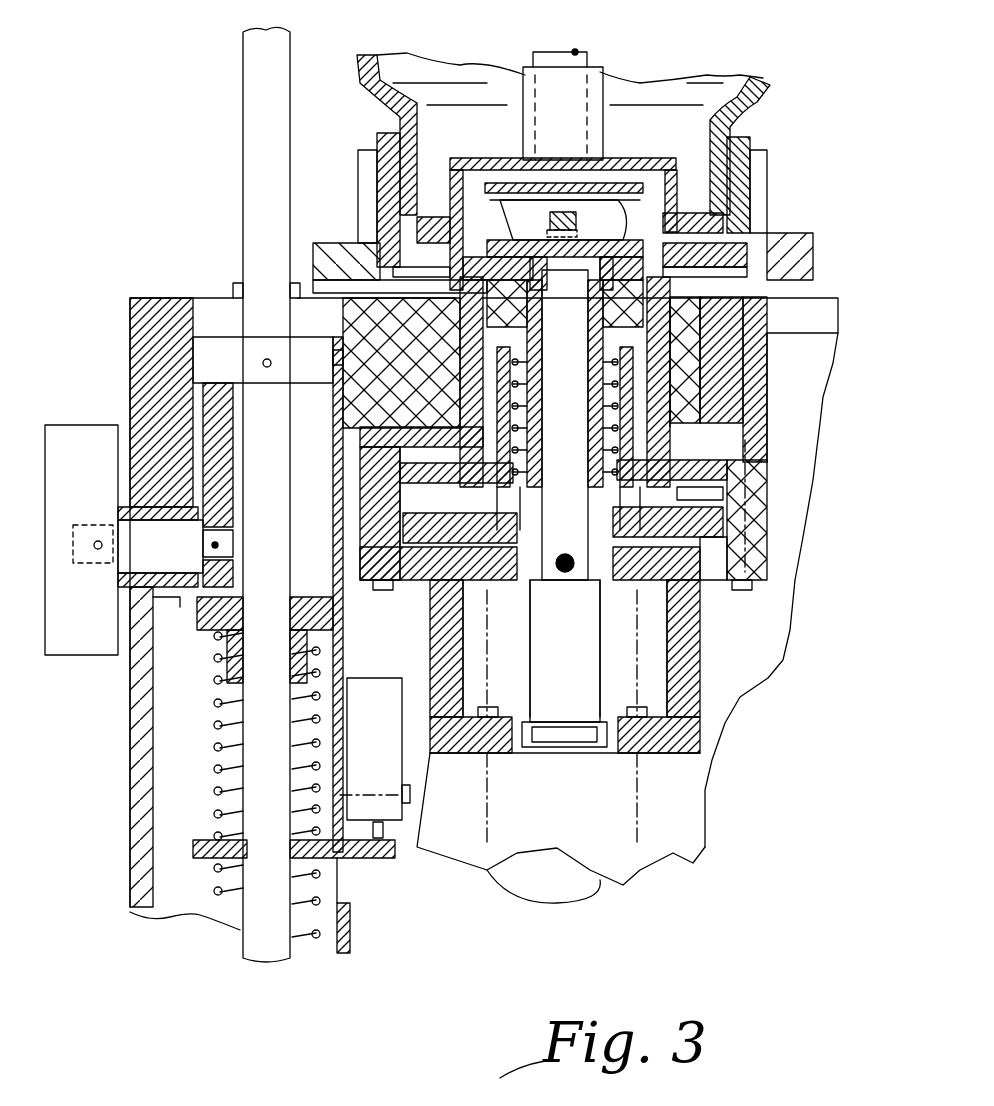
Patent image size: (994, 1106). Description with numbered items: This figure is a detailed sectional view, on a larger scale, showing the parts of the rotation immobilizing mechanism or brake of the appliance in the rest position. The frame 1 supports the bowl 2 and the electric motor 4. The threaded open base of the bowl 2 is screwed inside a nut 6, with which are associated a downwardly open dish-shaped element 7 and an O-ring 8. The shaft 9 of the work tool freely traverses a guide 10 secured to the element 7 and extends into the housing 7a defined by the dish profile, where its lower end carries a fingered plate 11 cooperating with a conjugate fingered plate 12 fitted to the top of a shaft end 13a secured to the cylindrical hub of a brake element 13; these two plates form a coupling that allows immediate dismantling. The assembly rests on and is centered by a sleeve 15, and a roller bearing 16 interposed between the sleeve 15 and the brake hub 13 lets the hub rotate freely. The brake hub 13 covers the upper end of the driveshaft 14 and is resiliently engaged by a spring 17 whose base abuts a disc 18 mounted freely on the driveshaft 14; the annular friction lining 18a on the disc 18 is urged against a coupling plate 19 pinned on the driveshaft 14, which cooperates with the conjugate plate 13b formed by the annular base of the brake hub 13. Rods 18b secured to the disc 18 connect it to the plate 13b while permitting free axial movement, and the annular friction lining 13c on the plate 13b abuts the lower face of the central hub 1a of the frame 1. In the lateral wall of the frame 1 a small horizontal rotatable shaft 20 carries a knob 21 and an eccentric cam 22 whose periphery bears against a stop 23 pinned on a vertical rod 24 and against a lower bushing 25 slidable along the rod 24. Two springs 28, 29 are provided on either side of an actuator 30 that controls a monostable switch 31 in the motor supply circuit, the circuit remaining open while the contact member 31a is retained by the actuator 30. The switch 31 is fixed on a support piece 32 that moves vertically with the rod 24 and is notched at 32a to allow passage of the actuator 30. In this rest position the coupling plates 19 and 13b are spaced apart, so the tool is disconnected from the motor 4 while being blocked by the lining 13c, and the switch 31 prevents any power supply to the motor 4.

The frame 1 is at (160, 312).
The central hub 1a is at (753, 447).
The bowl 2 is at (355, 75).
The electric motor 4 is at (700, 832).
The nut 6 is at (795, 252).
The element 7 is at (620, 160).
The housing 7a is at (650, 180).
The O-ring 8 is at (380, 225).
The shaft 9 is at (535, 55).
The guide 10 is at (572, 92).
The plate 11 is at (503, 185).
The plate 12 is at (715, 135).
The brake element 13 is at (628, 362).
The shaft end 13a is at (520, 205).
The conjugate plate 13b is at (745, 470).
The annular friction lining 13c is at (745, 463).
The driveshaft 14 is at (568, 720).
The sleeve 15 is at (770, 368).
The roller bearing 16 is at (440, 350).
The spring 17 is at (520, 420).
The disc 18 is at (575, 520).
The annular friction lining 18a is at (628, 578).
The rods 18b is at (520, 530).
The coupling plate 19 is at (420, 545).
The horizontal rotatable shaft 20 is at (100, 585).
The knob 21 is at (47, 658).
The cam 22 is at (225, 425).
The stop 23 is at (215, 355).
The vertical rod 24 is at (262, 108).
The lower bushing 25 is at (213, 638).
The spring 28 is at (215, 820).
The spring 29 is at (320, 940).
The actuator 30 is at (203, 860).
The switch 31 is at (365, 700).
The contact member 31a is at (385, 840).
The support piece 32 is at (352, 915).
The notch 32a is at (345, 888).